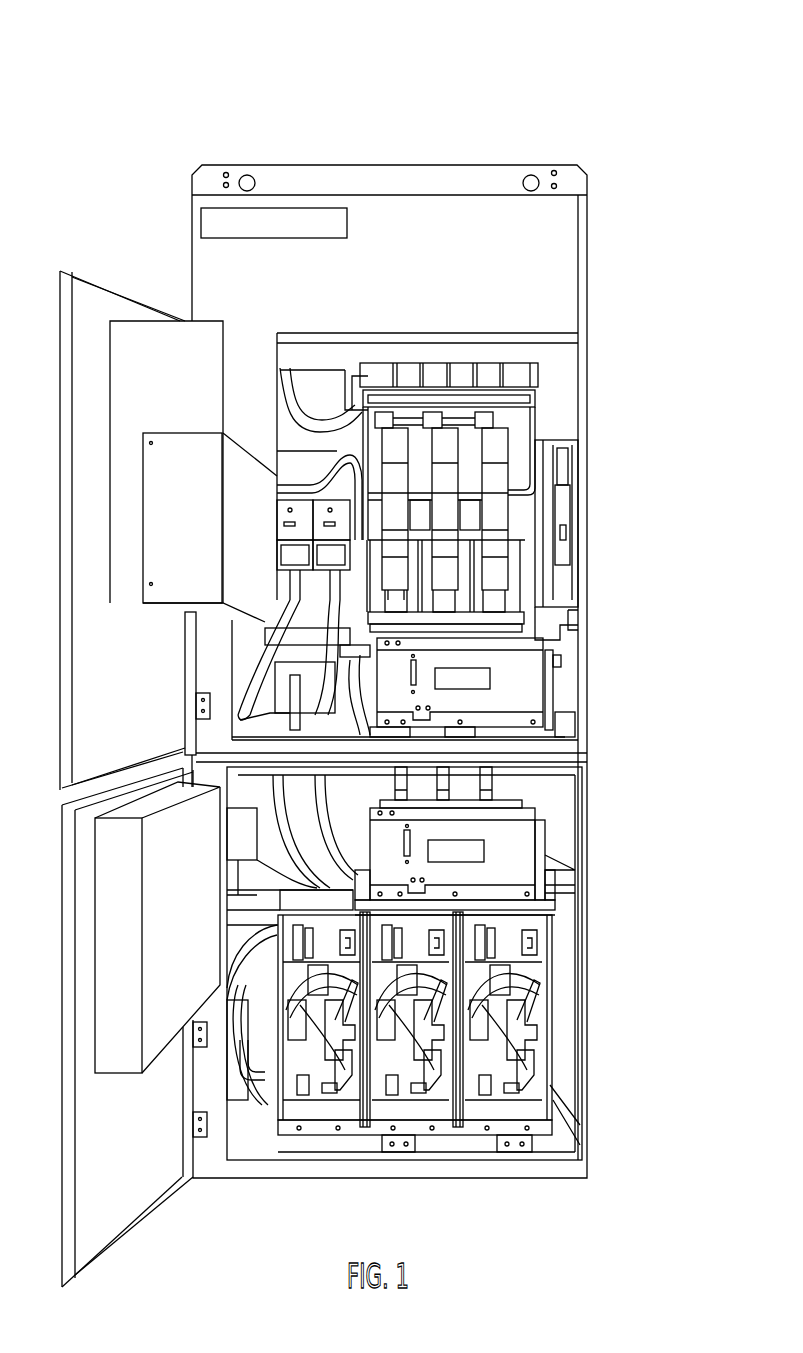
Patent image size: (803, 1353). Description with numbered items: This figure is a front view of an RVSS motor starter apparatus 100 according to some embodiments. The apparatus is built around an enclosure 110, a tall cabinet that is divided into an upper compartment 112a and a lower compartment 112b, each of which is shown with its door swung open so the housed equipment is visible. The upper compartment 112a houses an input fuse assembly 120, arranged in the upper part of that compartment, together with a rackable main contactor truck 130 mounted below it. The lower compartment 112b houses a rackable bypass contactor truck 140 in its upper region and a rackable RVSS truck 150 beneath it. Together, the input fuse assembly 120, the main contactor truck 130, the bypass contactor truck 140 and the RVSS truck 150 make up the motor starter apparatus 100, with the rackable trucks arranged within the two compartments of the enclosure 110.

The motor starter apparatus 100 is at (527, 76).
The enclosure 110 is at (412, 174).
The upper compartment 112a is at (292, 363).
The lower compartment 112b is at (255, 1010).
The input fuse assembly 120 is at (458, 450).
The rackable main contactor truck 130 is at (525, 676).
The rackable bypass contactor truck 140 is at (510, 853).
The rackable RVSS truck 150 is at (327, 1130).